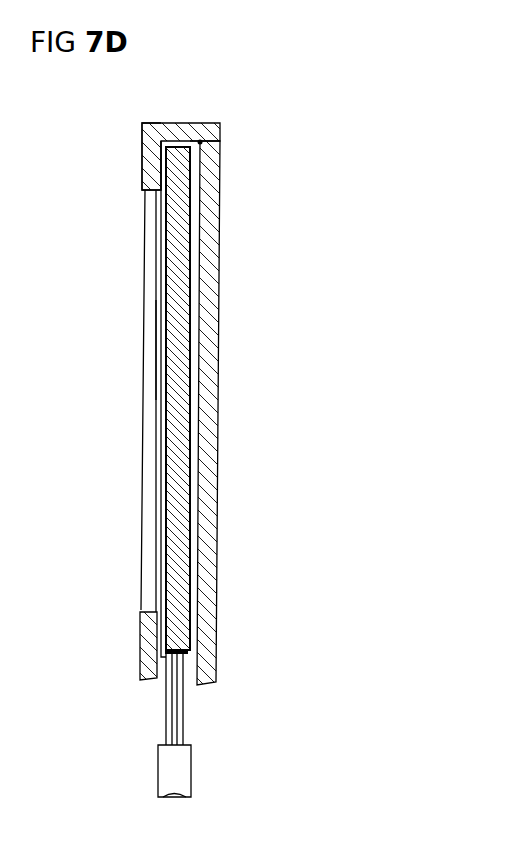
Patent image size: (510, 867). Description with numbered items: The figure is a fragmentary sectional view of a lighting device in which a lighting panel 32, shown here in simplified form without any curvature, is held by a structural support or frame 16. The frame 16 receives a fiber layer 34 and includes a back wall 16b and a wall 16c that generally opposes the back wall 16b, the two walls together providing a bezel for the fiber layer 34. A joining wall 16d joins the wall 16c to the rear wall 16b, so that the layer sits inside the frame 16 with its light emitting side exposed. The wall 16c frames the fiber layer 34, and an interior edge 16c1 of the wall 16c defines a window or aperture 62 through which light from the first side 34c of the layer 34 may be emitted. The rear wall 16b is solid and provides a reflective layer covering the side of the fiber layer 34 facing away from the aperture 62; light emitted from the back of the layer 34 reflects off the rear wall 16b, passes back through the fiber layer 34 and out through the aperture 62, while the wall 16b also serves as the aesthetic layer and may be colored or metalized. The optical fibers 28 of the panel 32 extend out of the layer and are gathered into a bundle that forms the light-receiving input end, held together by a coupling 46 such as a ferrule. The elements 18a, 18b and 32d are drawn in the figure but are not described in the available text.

The structural support or frame 16 is at (180, 123).
The back wall 16b is at (218, 161).
The wall 16c is at (152, 173).
The interior edge 16c1 is at (147, 197).
The joining wall 16d is at (202, 142).
The electrode contact 18a is at (177, 652).
The lower block 18b is at (158, 694).
The optical fibers 28 is at (181, 697).
The panel 32 is at (236, 256).
The sensor body side surface 32d is at (191, 373).
The fiber layer 34 is at (163, 409).
The first side 34c is at (173, 507).
The coupling 46 is at (192, 774).
The window or aperture 62 is at (126, 338).